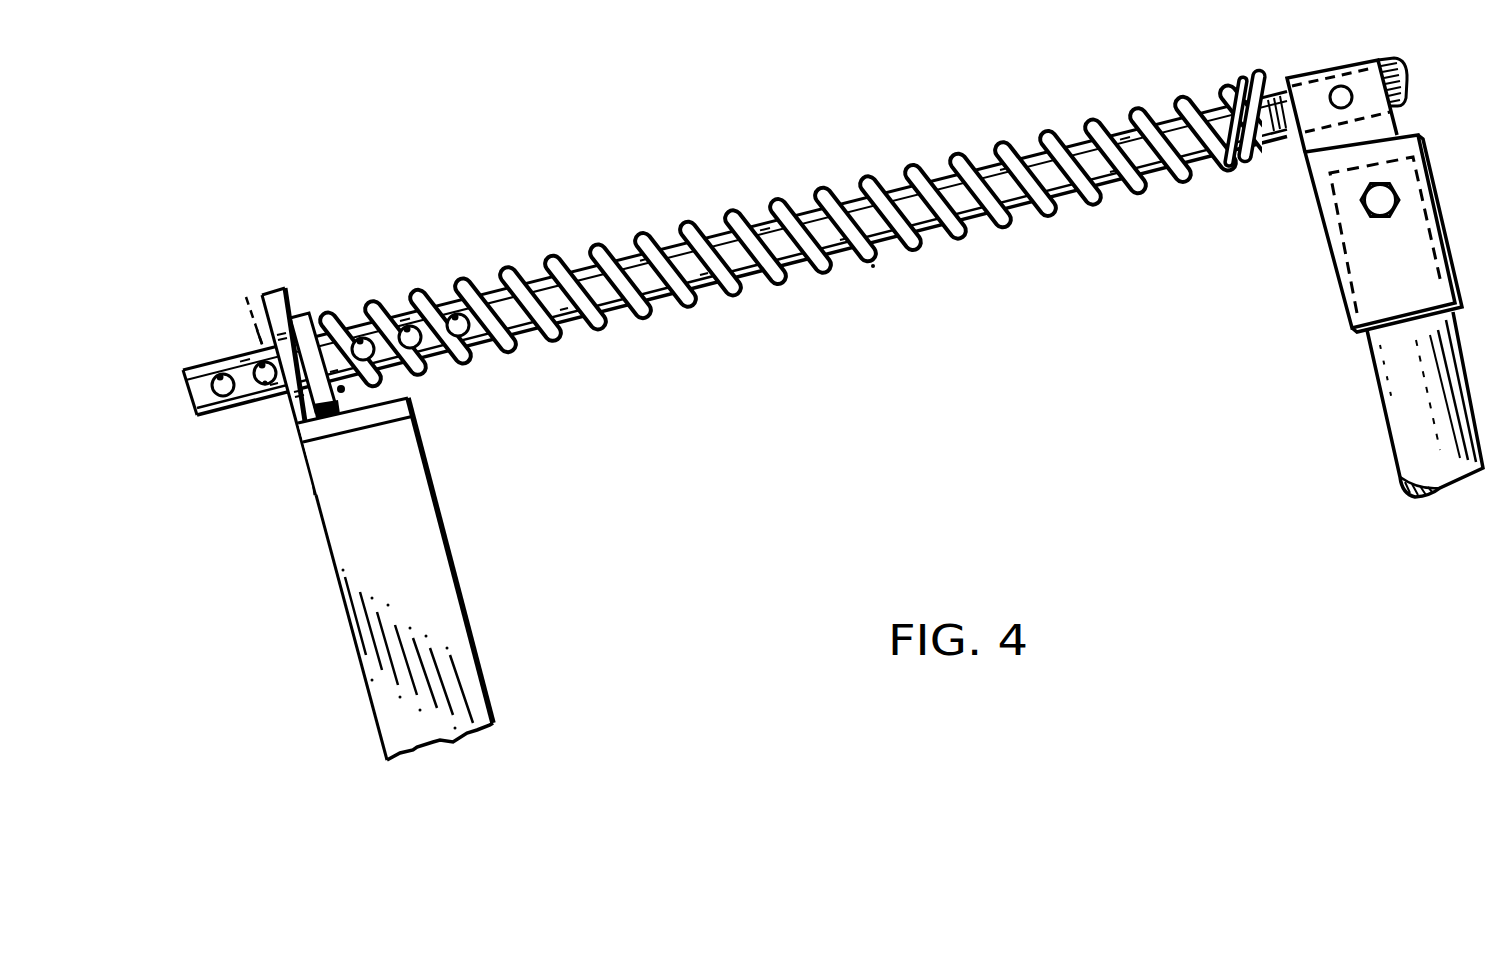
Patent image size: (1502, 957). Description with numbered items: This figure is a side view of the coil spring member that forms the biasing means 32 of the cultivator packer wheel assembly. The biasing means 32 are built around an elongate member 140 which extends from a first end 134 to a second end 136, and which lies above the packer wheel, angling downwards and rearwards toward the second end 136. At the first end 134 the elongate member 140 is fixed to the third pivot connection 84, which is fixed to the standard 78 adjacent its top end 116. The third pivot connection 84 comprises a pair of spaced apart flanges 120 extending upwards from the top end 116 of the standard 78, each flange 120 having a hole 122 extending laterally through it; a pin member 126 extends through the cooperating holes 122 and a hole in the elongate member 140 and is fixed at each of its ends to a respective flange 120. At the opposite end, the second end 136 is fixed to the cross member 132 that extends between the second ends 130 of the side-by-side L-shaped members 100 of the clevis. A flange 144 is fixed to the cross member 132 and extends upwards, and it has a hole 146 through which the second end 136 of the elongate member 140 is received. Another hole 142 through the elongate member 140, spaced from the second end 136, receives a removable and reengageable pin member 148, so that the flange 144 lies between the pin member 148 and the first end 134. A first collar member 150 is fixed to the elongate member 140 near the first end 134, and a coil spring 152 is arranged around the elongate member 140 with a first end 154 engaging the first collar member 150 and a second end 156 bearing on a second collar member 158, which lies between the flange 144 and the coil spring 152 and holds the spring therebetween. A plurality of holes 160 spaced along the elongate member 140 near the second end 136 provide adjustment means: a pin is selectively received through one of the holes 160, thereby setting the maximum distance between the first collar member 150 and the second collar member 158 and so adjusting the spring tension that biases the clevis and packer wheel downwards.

The biasing means 32 is at (619, 100).
The standard 78 is at (1379, 404).
The third pivot connection 84 is at (1294, 180).
The L-shaped member 100 is at (490, 672).
The top end 116 is at (1370, 236).
The flange 120 is at (1386, 128).
The hole 122 is at (1337, 90).
The pin member 126 is at (1345, 87).
The second end 130 is at (350, 517).
The cross member 132 is at (413, 393).
The first end 134 is at (1404, 75).
The second end 136 is at (178, 403).
The elongate member 140 is at (888, 180).
The hole 142 is at (268, 385).
The flange 144 is at (268, 288).
The hole 146 is at (252, 308).
The pin member 148 is at (254, 345).
The first collar member 150 is at (1256, 76).
The coil spring 152 is at (872, 268).
The first end 154 is at (1238, 80).
The second end 156 is at (340, 390).
The second collar member 158 is at (299, 313).
The holes 160 is at (218, 378).